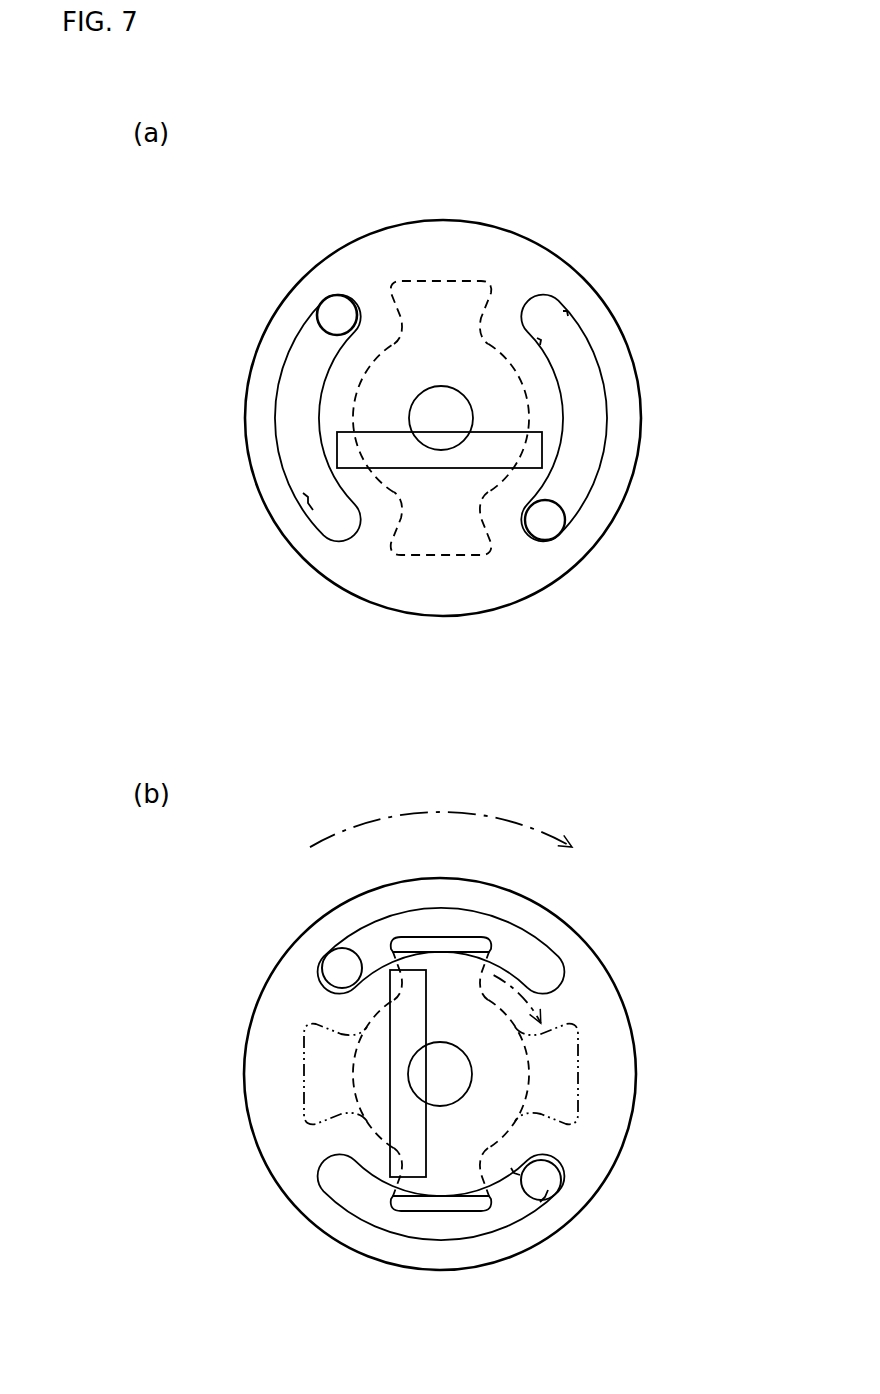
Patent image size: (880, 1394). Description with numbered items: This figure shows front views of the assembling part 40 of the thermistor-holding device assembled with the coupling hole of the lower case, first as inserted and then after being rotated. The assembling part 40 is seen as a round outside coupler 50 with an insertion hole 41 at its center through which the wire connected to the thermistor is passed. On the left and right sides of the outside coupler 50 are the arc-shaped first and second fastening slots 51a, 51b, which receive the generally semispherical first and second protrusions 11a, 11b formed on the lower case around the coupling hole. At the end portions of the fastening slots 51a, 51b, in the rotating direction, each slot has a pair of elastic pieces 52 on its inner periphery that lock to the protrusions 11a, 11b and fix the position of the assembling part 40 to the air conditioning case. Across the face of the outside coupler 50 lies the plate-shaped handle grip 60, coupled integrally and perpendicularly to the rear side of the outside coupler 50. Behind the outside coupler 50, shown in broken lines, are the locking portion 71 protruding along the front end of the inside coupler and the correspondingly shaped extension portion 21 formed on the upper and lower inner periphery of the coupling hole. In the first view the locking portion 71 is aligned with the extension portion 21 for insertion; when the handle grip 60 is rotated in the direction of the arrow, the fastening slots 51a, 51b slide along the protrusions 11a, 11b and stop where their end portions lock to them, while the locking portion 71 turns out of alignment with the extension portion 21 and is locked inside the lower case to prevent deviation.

In FIG. 7a, the first protrusion 11a is at (333, 313).
In FIG. 7b, the first protrusion 11a is at (335, 970).
In FIG. 7a, the second protrusion 11b is at (542, 527).
In FIG. 7b, the second protrusion 11b is at (540, 1180).
In FIG. 7a, the extension portion 21 is at (430, 280).
In FIG. 7b, the extension portion 21 is at (405, 950).
In FIG. 7a, the assembling part 40 is at (555, 268).
In FIG. 7b, the assembling part 40 is at (623, 1043).
In FIG. 7a, the insertion hole 41 is at (445, 405).
In FIG. 7b, the insertion hole 41 is at (447, 1090).
In FIG. 7a, the outside coupler 50 is at (375, 582).
In FIG. 7b, the outside coupler 50 is at (277, 1105).
In FIG. 7a, the first fastening slot 51a is at (295, 403).
In FIG. 7b, the first fastening slot 51a is at (525, 957).
In FIG. 7a, the second fastening slot 51b is at (583, 445).
In FIG. 7b, the second fastening slot 51b is at (363, 1200).
In FIG. 7a, the elastic piece 52 is at (537, 339).
In FIG. 7b, the elastic piece 52 is at (513, 1192).
In FIG. 7a, the handle grip 60 is at (482, 450).
In FIG. 7b, the handle grip 60 is at (403, 1047).
In FIG. 7a, the locking portion 71 is at (441, 312).
In FIG. 7b, the locking portion 71 is at (555, 1087).